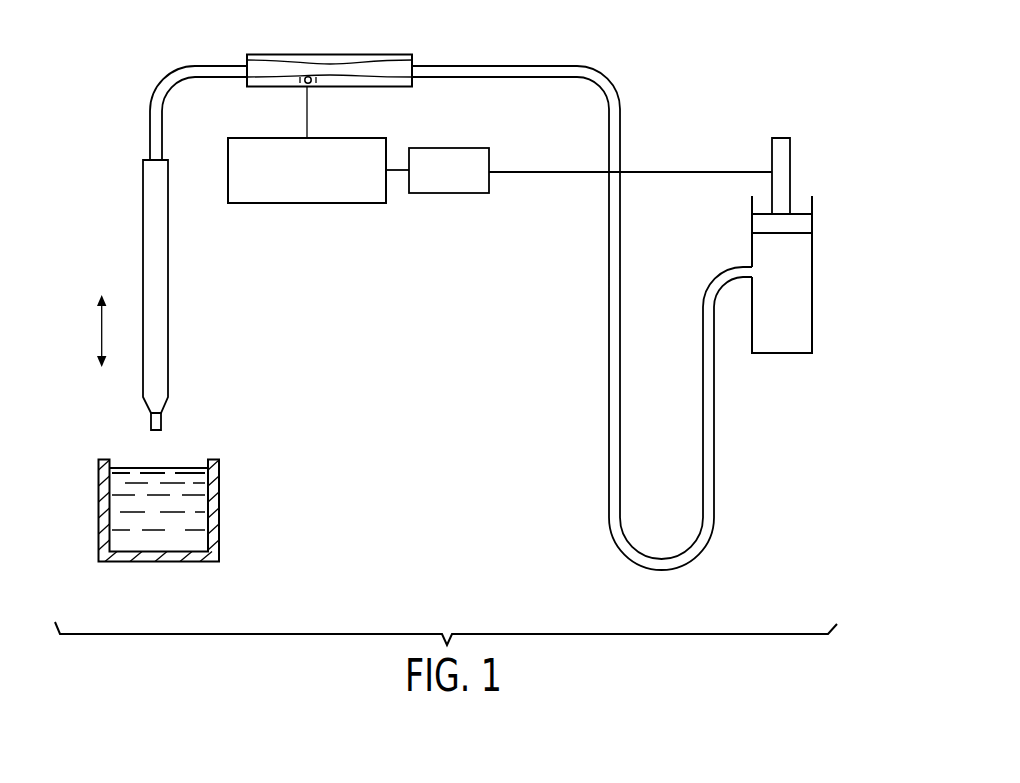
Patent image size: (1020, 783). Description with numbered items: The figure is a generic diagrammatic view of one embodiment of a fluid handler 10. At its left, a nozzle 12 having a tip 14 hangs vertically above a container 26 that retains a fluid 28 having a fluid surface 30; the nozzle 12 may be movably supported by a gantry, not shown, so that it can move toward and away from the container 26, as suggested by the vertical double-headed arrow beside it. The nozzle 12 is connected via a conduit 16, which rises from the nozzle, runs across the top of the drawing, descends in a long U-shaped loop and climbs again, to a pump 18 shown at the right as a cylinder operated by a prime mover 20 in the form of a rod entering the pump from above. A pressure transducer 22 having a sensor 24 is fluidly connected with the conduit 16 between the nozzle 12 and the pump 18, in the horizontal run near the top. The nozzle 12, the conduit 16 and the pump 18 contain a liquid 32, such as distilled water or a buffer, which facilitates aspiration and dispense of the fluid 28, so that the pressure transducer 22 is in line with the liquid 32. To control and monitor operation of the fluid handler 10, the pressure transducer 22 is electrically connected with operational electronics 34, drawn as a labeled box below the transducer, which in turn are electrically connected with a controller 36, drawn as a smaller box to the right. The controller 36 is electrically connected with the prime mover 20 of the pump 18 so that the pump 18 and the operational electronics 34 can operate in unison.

The fluid handler 10 is at (784, 77).
The nozzle 12 is at (168, 347).
The tip 14 is at (162, 417).
The conduit 16 is at (611, 84).
The pump 18 is at (812, 327).
The prime mover 20 is at (791, 155).
The pressure transducer 22 is at (259, 48).
The sensor 24 is at (320, 85).
The container 26 is at (224, 568).
The fluid 28 is at (193, 540).
The fluid surface 30 is at (187, 466).
The liquid 32 is at (797, 267).
The operational electronics 34 is at (263, 204).
The controller 36 is at (447, 195).